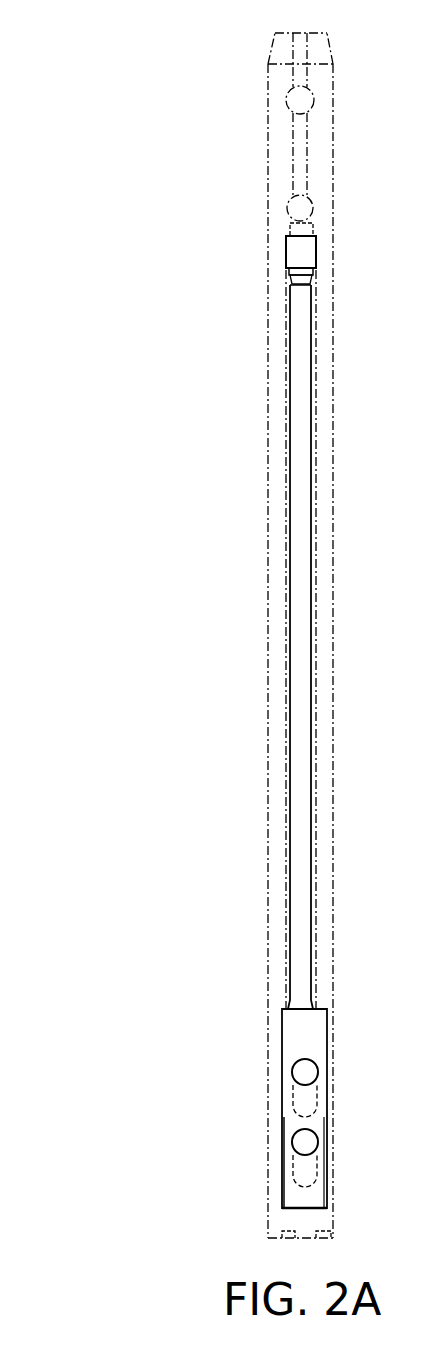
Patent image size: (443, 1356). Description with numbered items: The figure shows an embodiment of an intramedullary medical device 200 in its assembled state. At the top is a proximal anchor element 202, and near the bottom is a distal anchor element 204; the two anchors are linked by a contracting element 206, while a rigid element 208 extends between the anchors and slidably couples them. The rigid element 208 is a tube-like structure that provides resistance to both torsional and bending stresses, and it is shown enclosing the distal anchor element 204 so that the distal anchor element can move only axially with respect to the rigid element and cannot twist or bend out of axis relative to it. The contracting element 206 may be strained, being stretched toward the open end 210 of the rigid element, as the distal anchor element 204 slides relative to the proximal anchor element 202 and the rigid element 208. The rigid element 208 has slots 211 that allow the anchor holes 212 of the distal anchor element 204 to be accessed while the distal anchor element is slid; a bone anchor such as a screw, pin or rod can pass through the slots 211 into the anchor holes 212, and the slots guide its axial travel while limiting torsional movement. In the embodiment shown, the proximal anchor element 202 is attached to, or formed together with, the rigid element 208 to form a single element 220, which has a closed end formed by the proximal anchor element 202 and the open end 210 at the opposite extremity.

The intramedullary medical device 200 is at (134, 61).
The proximal anchor element 202 is at (279, 178).
The distal anchor element 204 is at (290, 1127).
The contracting element 206 is at (302, 578).
The rigid element 208 is at (280, 745).
The open end 210 is at (293, 1238).
The slots 211 is at (318, 1100).
The anchor holes 212 is at (300, 1070).
The single element 220 is at (442, 33).